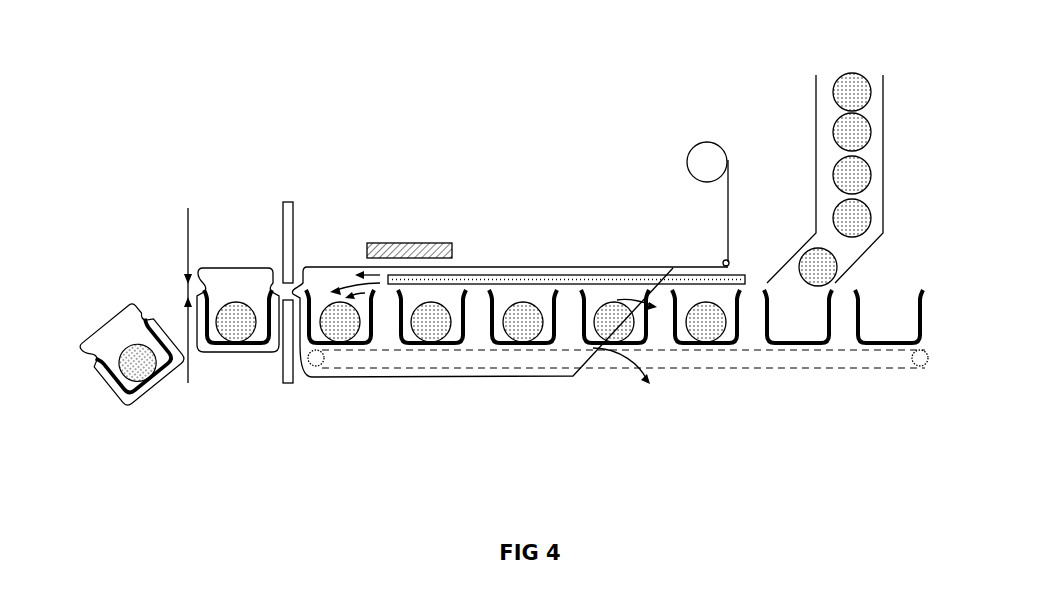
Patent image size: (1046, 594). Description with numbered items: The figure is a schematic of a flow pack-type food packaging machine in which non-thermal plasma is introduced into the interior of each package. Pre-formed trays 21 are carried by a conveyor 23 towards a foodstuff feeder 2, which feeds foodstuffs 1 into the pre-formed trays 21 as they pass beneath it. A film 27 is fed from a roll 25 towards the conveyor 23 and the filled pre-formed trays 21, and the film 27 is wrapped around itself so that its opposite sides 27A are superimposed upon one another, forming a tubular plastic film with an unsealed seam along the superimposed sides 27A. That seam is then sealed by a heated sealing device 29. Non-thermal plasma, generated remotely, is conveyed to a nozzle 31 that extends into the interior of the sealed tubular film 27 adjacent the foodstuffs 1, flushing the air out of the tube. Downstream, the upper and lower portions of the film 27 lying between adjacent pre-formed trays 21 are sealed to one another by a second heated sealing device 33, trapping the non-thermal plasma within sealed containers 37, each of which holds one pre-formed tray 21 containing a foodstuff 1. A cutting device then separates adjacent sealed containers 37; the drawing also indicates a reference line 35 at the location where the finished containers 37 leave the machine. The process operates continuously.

The foodstuff 1 is at (523, 318).
The foodstuff feeder 2 is at (816, 175).
The pre-formed tray 21 is at (581, 298).
The conveyor 23 is at (780, 372).
The roll 25 is at (706, 160).
The film 27 is at (728, 218).
The opposite sides of the film 27A is at (615, 372).
The heated sealing device 29 is at (405, 252).
The nozzle 31 is at (517, 275).
The heated sealing device 33 is at (283, 226).
The reference line 35 is at (187, 232).
The sealed container 37 is at (226, 398).